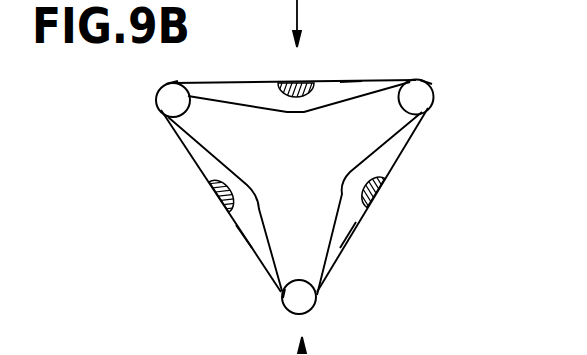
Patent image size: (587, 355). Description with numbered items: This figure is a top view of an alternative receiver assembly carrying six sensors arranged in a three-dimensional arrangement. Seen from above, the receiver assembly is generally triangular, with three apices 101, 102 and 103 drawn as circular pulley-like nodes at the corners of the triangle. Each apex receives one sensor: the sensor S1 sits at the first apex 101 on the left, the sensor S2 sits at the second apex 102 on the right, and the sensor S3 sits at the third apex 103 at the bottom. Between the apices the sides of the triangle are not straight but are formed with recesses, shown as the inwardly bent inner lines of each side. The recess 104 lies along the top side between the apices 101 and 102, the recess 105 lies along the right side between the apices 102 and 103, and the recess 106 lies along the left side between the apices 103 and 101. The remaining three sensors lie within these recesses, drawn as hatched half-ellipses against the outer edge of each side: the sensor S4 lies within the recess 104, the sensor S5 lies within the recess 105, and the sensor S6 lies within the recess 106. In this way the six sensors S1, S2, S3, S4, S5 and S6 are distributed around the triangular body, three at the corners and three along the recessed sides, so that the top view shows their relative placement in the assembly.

The sensor S1 is at (158, 105).
The sensor S2 is at (435, 103).
The sensor S3 is at (319, 303).
The sensor S4 is at (308, 70).
The sensor S5 is at (389, 189).
The sensor S6 is at (206, 193).
The apex 101 is at (182, 80).
The apex 102 is at (433, 73).
The apex 103 is at (280, 307).
The recess 104 is at (350, 82).
The recess 105 is at (346, 232).
The recess 106 is at (244, 231).